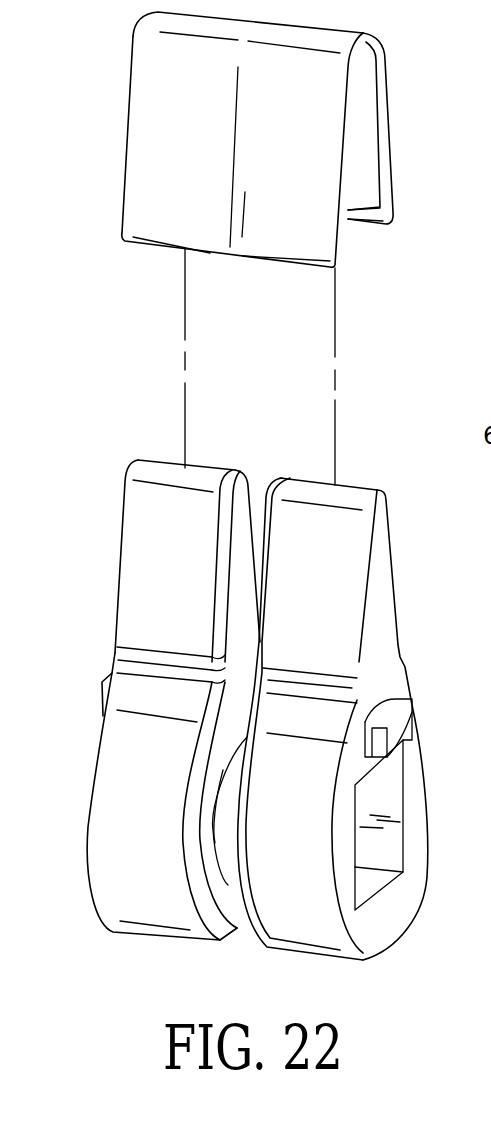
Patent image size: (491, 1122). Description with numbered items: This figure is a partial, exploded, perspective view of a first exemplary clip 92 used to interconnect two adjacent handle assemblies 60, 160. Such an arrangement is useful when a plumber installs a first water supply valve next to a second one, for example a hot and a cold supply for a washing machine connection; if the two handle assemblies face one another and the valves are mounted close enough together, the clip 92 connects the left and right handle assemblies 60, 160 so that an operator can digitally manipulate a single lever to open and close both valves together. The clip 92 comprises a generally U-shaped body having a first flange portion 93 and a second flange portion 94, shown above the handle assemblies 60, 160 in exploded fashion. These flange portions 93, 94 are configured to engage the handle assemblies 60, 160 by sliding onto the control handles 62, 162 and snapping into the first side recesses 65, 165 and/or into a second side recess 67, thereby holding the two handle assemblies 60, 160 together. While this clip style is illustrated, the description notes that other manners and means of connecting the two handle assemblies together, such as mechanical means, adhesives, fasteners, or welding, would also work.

The clip 92 is at (150, 155).
The first flange portion 93 is at (350, 256).
The second flange portion 94 is at (373, 227).
The handle assembly 60 is at (363, 673).
The control handle 62 is at (397, 568).
The first side recess 65 is at (358, 686).
The second side recess 67 is at (402, 652).
The handle assembly 160 is at (144, 653).
The control handle 162 is at (137, 555).
The first side recess 165 is at (127, 660).